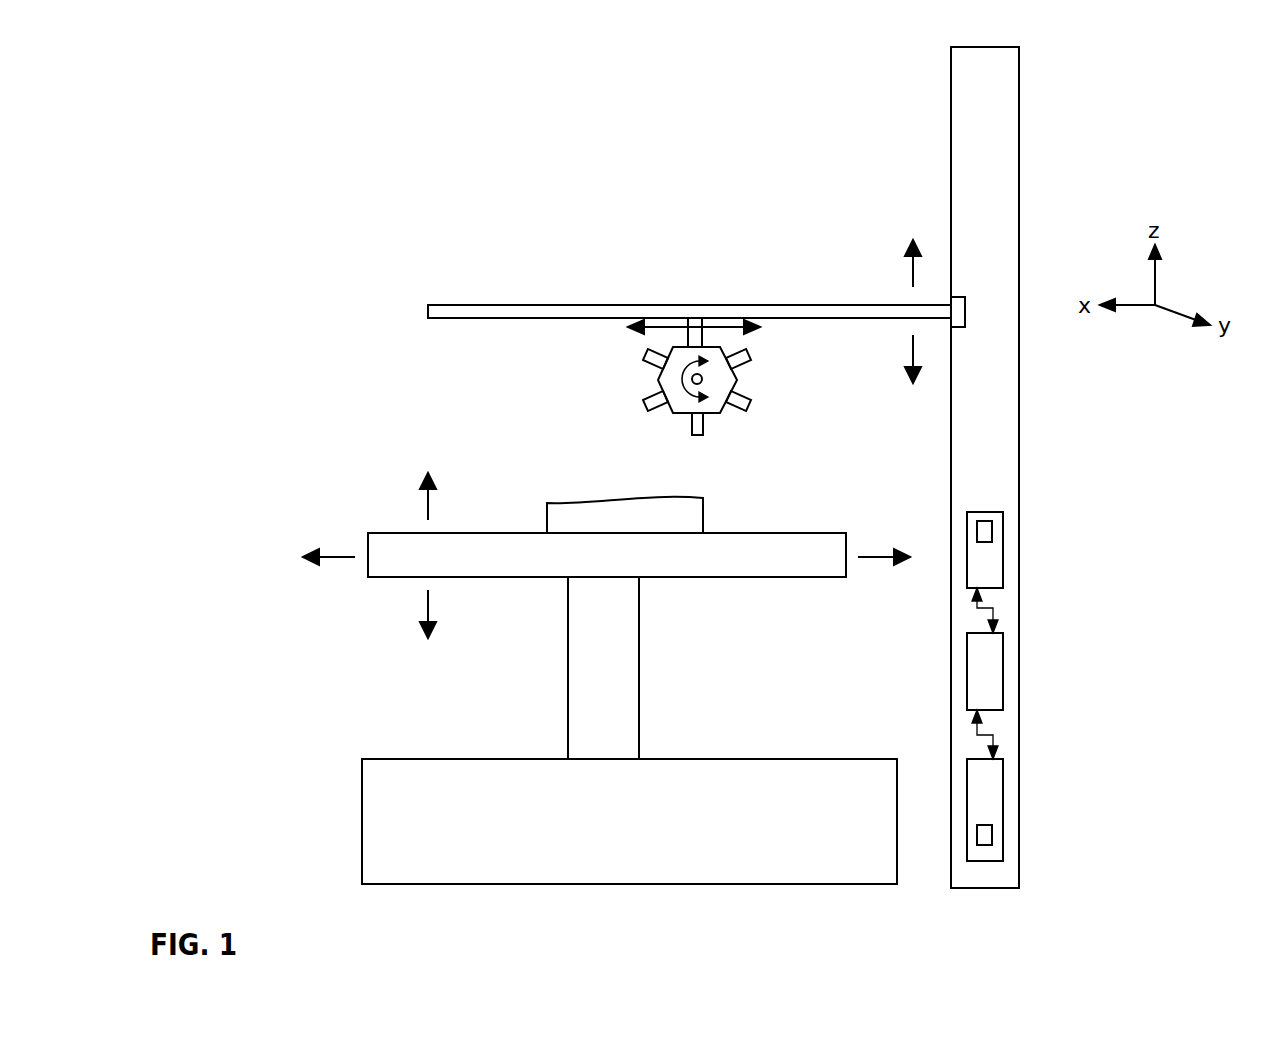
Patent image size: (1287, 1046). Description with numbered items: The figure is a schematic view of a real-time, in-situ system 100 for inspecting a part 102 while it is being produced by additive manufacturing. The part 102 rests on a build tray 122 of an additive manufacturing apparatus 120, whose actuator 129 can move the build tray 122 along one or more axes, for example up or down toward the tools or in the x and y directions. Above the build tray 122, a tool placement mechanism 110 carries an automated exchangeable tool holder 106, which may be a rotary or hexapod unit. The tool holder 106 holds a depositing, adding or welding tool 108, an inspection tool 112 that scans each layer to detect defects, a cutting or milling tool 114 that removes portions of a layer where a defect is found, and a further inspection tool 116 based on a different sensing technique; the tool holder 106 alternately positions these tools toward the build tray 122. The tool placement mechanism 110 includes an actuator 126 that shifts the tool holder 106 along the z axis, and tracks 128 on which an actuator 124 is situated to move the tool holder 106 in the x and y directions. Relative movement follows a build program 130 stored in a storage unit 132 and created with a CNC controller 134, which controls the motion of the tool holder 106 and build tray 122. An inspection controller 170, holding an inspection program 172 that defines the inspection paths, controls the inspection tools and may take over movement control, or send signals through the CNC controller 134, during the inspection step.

The system 100 is at (247, 196).
The part 102 is at (571, 503).
The tool holder 106 is at (658, 380).
The tool 108 is at (647, 356).
The tool placement mechanism 110 is at (445, 305).
The inspection tool 112 is at (648, 403).
The cutting/milling tool 114 is at (754, 404).
The inspection tool 116 is at (752, 356).
The additive manufacturing apparatus 120 is at (197, 740).
The build tray 122 is at (798, 577).
The actuator 124 is at (703, 328).
The actuator 126 is at (965, 318).
The tracks 128 is at (847, 318).
The actuator 129 is at (639, 632).
The build program 130 is at (992, 835).
The storage unit 132 is at (1003, 795).
The CNC controller 134 is at (1003, 683).
The inspection controller 170 is at (1003, 572).
The inspection program 172 is at (992, 531).